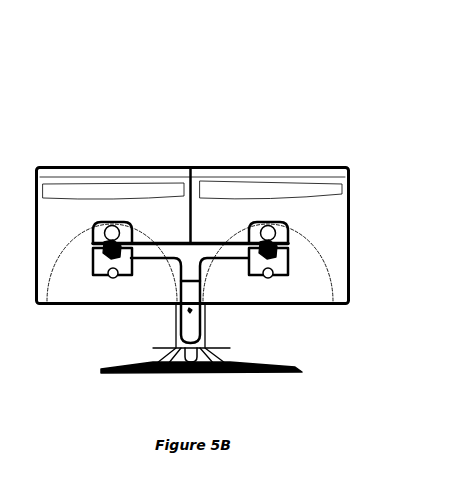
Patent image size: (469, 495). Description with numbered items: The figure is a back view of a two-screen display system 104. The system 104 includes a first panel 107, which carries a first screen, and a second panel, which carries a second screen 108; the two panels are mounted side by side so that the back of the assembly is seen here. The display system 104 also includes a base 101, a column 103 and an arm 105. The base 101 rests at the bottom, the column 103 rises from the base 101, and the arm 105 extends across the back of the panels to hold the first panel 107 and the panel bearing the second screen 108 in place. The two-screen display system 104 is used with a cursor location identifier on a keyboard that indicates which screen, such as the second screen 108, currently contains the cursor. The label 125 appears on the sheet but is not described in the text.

The display assembly 104 is at (189, 134).
The display housing 108 is at (95, 165).
The display bezel 107 is at (292, 167).
The mounting bracket 105 is at (168, 243).
The stand column 103 is at (173, 325).
The base 101 is at (285, 371).
The reference marker 125 is at (12, 461).